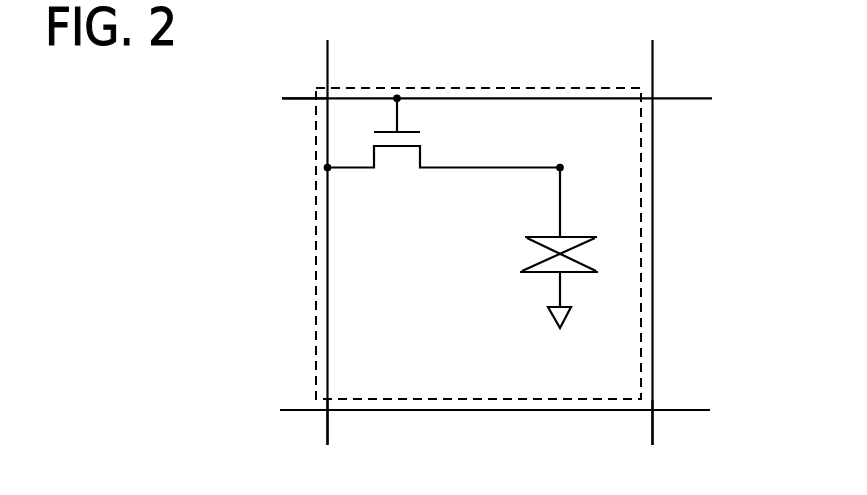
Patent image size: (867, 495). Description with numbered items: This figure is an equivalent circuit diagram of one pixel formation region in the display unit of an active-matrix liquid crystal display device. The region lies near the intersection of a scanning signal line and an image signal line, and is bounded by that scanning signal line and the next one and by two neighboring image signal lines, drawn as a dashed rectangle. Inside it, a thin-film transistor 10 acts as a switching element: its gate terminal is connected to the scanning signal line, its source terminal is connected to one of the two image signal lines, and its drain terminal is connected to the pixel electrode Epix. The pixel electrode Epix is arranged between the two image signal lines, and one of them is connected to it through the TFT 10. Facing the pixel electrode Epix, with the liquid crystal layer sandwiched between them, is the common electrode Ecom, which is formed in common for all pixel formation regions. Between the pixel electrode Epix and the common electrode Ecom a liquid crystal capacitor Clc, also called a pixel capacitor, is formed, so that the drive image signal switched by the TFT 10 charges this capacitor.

The thin-film transistor (TFT) 10 is at (430, 133).
The pixel electrode Epix is at (557, 165).
The liquid crystal capacitor Clc is at (542, 248).
The common electrode Ecom is at (561, 312).